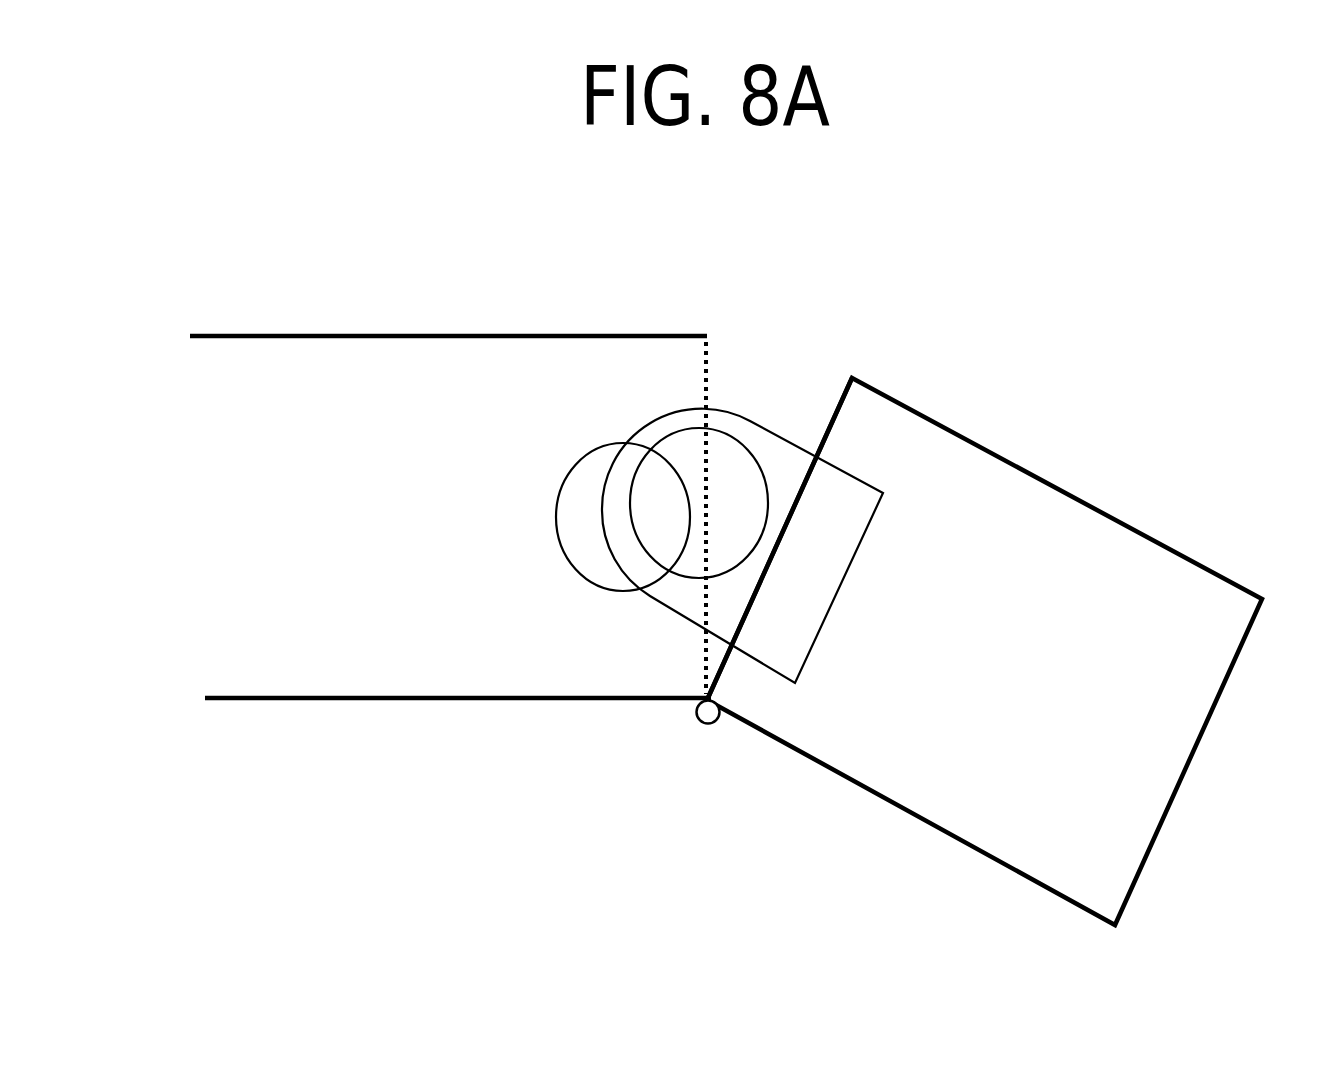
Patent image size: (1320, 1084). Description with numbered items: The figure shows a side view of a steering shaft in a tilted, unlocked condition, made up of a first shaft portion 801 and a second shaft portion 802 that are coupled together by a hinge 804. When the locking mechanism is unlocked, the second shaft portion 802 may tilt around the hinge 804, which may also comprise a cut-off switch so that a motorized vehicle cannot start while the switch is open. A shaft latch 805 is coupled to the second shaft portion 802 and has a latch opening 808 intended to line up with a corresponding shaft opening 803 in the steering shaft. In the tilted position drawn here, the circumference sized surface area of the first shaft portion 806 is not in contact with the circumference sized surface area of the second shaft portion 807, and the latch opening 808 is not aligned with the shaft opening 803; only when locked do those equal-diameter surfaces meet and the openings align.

The first shaft portion 801 is at (293, 411).
The second shaft portion 802 is at (1017, 457).
The shaft opening 803 is at (574, 493).
The hinge 804 is at (678, 723).
The shaft latch 805 is at (812, 547).
The circumference sized surface area of the first shaft portion 806 is at (720, 367).
The circumference sized surface area of the second shaft portion 807 is at (837, 365).
The latch opening 808 is at (677, 575).